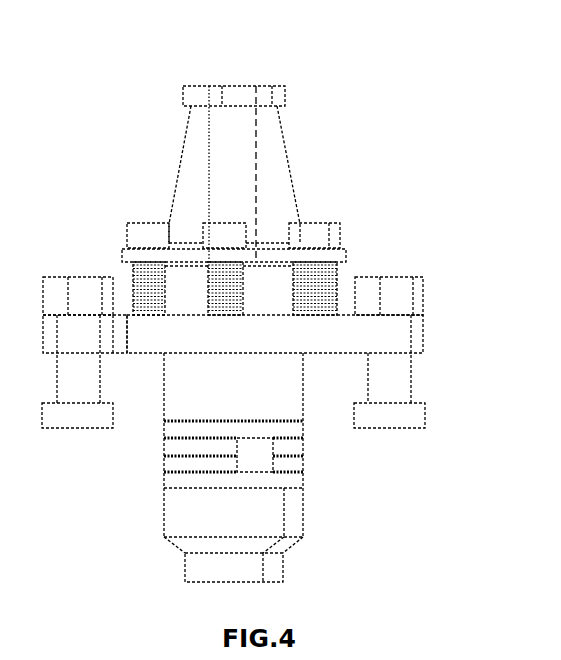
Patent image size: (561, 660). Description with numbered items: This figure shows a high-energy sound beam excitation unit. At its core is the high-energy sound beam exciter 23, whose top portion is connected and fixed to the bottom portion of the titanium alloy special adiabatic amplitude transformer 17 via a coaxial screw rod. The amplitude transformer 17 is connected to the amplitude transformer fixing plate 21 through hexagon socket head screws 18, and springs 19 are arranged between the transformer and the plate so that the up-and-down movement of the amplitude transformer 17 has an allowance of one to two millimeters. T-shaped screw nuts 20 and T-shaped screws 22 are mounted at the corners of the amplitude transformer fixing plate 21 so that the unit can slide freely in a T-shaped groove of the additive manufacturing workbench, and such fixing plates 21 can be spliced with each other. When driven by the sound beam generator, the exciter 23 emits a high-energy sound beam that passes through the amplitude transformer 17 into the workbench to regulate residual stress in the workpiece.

The titanium alloy special adiabatic amplitude transformer 17 is at (256, 137).
The hexagon socket head screw 18 is at (310, 239).
The spring 19 is at (337, 282).
The T-shaped screw nut 20 is at (382, 305).
The amplitude transformer fixing plate 21 is at (393, 340).
The T-shaped screw 22 is at (406, 416).
The high-energy sound beam exciter 23 is at (277, 519).